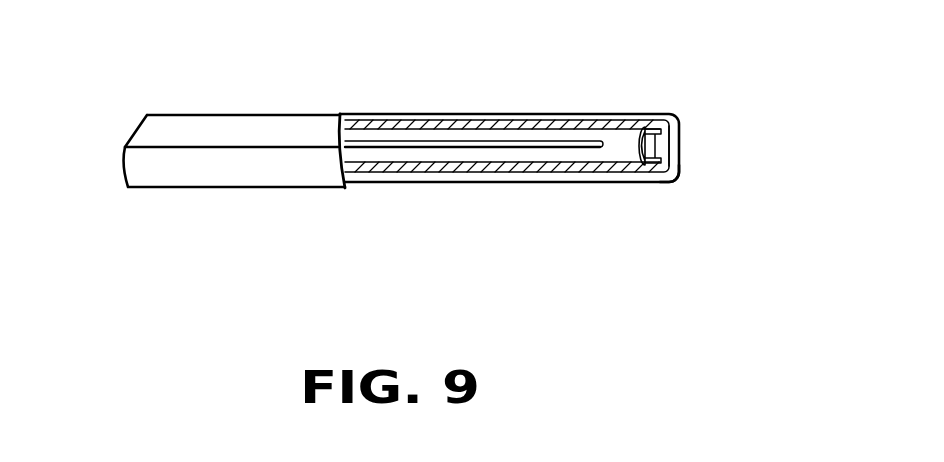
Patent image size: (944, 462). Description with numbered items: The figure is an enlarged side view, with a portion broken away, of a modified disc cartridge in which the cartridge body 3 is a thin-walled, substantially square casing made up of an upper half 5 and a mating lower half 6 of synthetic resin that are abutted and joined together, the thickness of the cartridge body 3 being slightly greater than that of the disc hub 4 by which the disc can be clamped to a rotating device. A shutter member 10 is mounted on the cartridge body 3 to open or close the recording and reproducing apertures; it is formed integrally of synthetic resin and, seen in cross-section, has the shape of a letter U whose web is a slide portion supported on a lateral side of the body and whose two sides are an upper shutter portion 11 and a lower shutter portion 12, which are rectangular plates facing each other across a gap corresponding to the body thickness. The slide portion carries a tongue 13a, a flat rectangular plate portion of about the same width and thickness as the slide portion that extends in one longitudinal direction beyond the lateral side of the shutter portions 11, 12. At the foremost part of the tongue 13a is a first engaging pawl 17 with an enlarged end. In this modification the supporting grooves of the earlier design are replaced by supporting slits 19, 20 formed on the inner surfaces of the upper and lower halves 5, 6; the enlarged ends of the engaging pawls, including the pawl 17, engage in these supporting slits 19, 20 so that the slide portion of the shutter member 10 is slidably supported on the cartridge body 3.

The cartridge body 3 is at (234, 135).
The disc hub 4 is at (375, 150).
The upper half 5 is at (275, 122).
The lower half 6 is at (223, 167).
The shutter member 10 is at (553, 157).
The upper shutter portion 11 is at (463, 113).
The lower shutter portion 12 is at (482, 182).
The tongue 13a is at (671, 148).
The first engaging pawl 17 is at (635, 128).
The supporting slit 19 is at (661, 131).
The supporting slit 20 is at (680, 181).